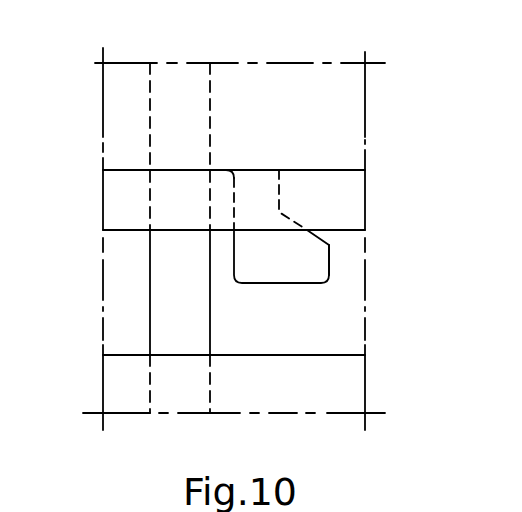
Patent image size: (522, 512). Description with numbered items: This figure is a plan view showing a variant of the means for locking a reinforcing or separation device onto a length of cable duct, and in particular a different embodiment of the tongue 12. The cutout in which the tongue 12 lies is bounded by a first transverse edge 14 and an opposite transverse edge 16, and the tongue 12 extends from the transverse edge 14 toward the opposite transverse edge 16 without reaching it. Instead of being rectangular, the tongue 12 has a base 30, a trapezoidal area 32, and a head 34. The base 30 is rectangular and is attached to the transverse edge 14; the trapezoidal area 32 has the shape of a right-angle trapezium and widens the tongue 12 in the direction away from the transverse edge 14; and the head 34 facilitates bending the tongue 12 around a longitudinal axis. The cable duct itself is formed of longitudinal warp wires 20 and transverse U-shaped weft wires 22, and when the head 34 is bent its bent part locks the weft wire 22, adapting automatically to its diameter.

The tongue 12 is at (247, 279).
The transverse edge 14 is at (123, 170).
The opposite transverse edge 16 is at (131, 354).
The warp wire 20 is at (175, 397).
The weft wire 22 is at (332, 180).
The base 30 is at (253, 192).
The trapezoidal area 32 is at (268, 255).
The head 34 is at (315, 262).